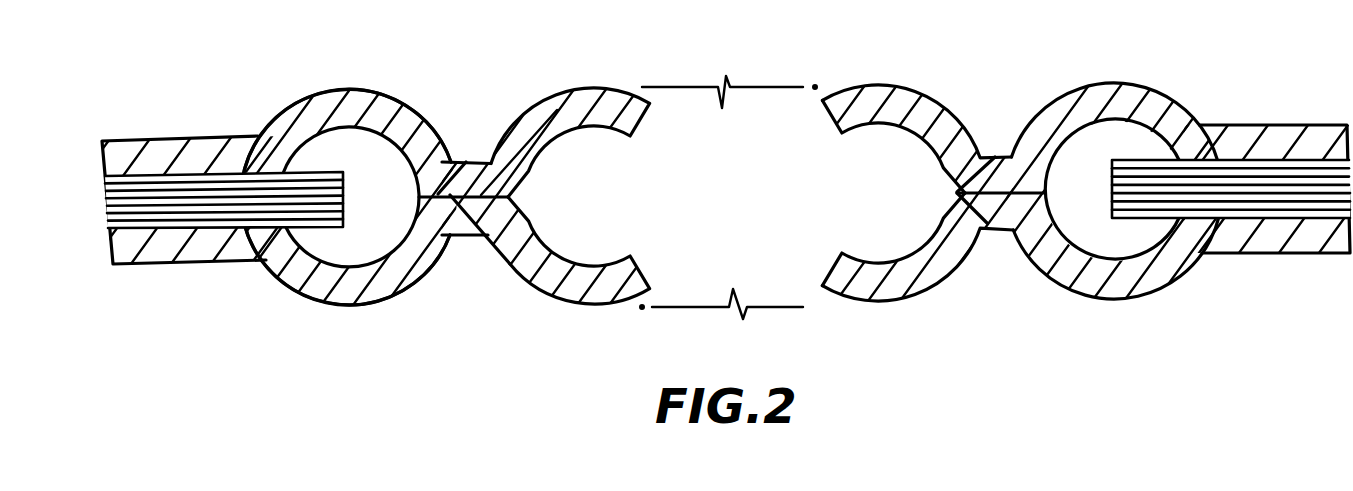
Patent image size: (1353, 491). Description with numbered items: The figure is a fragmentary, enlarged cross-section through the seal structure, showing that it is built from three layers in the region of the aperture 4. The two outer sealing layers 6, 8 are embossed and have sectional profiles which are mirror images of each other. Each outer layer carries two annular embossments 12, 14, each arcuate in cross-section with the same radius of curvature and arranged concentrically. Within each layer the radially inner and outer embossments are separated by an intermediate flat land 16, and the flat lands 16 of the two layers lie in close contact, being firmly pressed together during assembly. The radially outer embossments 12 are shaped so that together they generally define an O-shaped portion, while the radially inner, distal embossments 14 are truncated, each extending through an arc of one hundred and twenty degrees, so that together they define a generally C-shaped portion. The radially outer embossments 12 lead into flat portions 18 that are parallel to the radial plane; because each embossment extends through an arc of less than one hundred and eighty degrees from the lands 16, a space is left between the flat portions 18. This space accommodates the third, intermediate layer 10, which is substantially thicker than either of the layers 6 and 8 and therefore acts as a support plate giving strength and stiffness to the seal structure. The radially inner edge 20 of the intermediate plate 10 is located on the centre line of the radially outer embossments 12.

The aperture 4 is at (748, 210).
The outer sealing layer 6 is at (330, 89).
The outer sealing layer 8 is at (411, 268).
The intermediate layer 10 is at (157, 197).
The radially outer embossment 12 is at (405, 122).
The radially inner distal embossment 14 is at (537, 100).
The intermediate flat land 16 is at (462, 180).
The flat portion 18 is at (202, 155).
The radially inner edge 20 is at (345, 207).